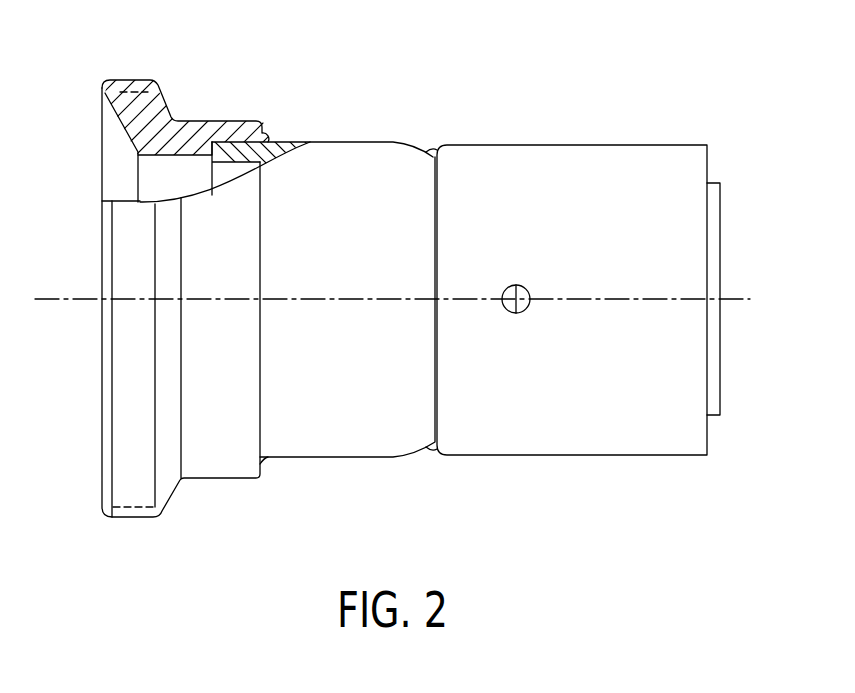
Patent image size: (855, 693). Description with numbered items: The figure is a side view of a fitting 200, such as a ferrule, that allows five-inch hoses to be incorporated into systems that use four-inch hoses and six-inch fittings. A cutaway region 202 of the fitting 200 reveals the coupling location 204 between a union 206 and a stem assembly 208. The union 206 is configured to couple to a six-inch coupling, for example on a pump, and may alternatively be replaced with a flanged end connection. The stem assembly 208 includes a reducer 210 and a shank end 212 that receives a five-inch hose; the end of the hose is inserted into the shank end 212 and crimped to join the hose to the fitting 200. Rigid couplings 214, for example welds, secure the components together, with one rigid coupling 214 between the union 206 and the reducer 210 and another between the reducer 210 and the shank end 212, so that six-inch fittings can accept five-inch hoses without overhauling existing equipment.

The fitting 200 is at (635, 52).
The cutaway region 202 is at (323, 102).
The coupling location 204 is at (243, 103).
The union 206 is at (107, 100).
The stem assembly 208 is at (392, 470).
The reducer 210 is at (357, 142).
The shank end 212 is at (578, 145).
The rigid coupling 214 is at (267, 462).